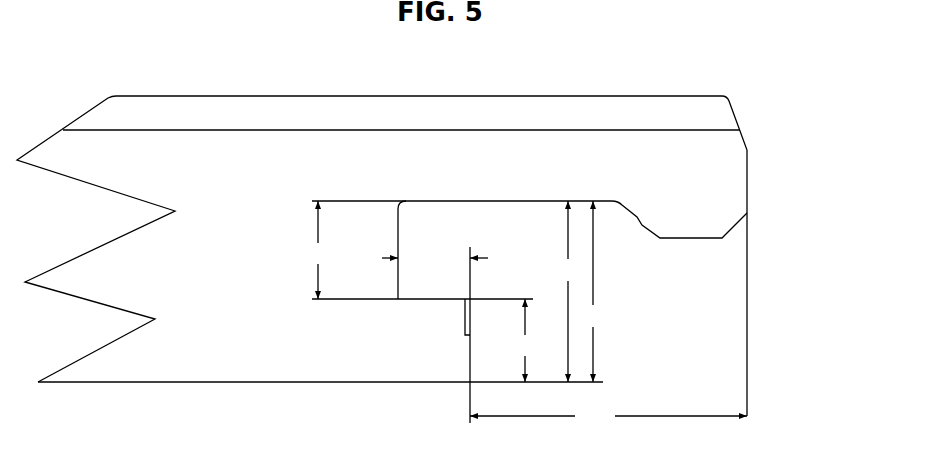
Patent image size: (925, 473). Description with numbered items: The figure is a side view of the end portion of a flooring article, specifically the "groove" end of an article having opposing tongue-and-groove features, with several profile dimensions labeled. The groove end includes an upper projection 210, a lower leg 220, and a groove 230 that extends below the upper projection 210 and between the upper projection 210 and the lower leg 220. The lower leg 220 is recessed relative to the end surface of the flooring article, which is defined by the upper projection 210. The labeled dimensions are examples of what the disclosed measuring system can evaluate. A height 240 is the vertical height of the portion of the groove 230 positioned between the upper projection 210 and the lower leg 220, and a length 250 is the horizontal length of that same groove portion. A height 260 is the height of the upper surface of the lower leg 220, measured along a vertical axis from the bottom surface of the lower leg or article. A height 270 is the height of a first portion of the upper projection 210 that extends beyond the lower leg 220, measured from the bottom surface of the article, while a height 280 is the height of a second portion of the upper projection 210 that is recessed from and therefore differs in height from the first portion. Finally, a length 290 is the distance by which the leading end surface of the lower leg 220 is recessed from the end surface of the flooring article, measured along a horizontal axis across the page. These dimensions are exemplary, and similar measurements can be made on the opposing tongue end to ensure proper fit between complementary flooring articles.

The upper projection 210 is at (728, 187).
The lower leg 220 is at (385, 357).
The groove 230 is at (630, 285).
The height of the groove portion 240 is at (322, 250).
The length of the groove portion 250 is at (435, 335).
The height of the upper surface of the lower leg 260 is at (523, 340).
The height of the first portion of the upper projection 270 is at (567, 291).
The height of the second portion of the upper projection 280 is at (593, 291).
The length of recess of the lower leg 290 is at (608, 416).